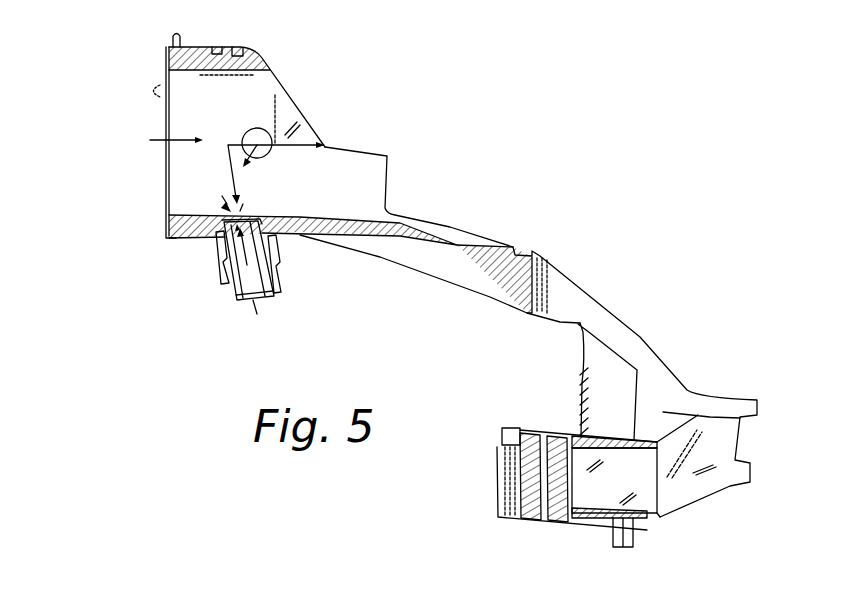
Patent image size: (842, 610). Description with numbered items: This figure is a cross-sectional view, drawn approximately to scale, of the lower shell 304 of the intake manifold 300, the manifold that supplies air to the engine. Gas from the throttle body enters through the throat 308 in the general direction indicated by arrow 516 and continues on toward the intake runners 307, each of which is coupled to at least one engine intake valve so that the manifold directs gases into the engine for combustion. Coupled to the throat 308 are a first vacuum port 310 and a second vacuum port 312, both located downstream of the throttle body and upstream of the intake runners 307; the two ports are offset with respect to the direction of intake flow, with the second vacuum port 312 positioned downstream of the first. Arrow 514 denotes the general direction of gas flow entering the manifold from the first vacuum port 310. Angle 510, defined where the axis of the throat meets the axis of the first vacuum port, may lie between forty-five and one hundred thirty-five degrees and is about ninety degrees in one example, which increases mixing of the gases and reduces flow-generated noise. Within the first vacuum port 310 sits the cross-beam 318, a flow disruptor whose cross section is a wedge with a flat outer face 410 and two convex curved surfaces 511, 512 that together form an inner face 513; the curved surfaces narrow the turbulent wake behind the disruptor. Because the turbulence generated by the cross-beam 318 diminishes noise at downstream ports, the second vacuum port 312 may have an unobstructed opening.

The intake manifold 300 is at (53, 604).
The lower shell 304 is at (560, 153).
The intake runners 307 is at (584, 418).
The throat 308 is at (140, 202).
The first vacuum port 310 is at (222, 292).
The second vacuum port 312 is at (253, 129).
The cross-beam 318 is at (222, 200).
The outer face 410 is at (245, 200).
The angle 510 is at (266, 164).
The curved surface 511 is at (268, 224).
The curved surface 512 is at (226, 232).
The inner face 513 is at (243, 262).
The arrow 514 is at (275, 282).
The arrow 516 is at (172, 140).